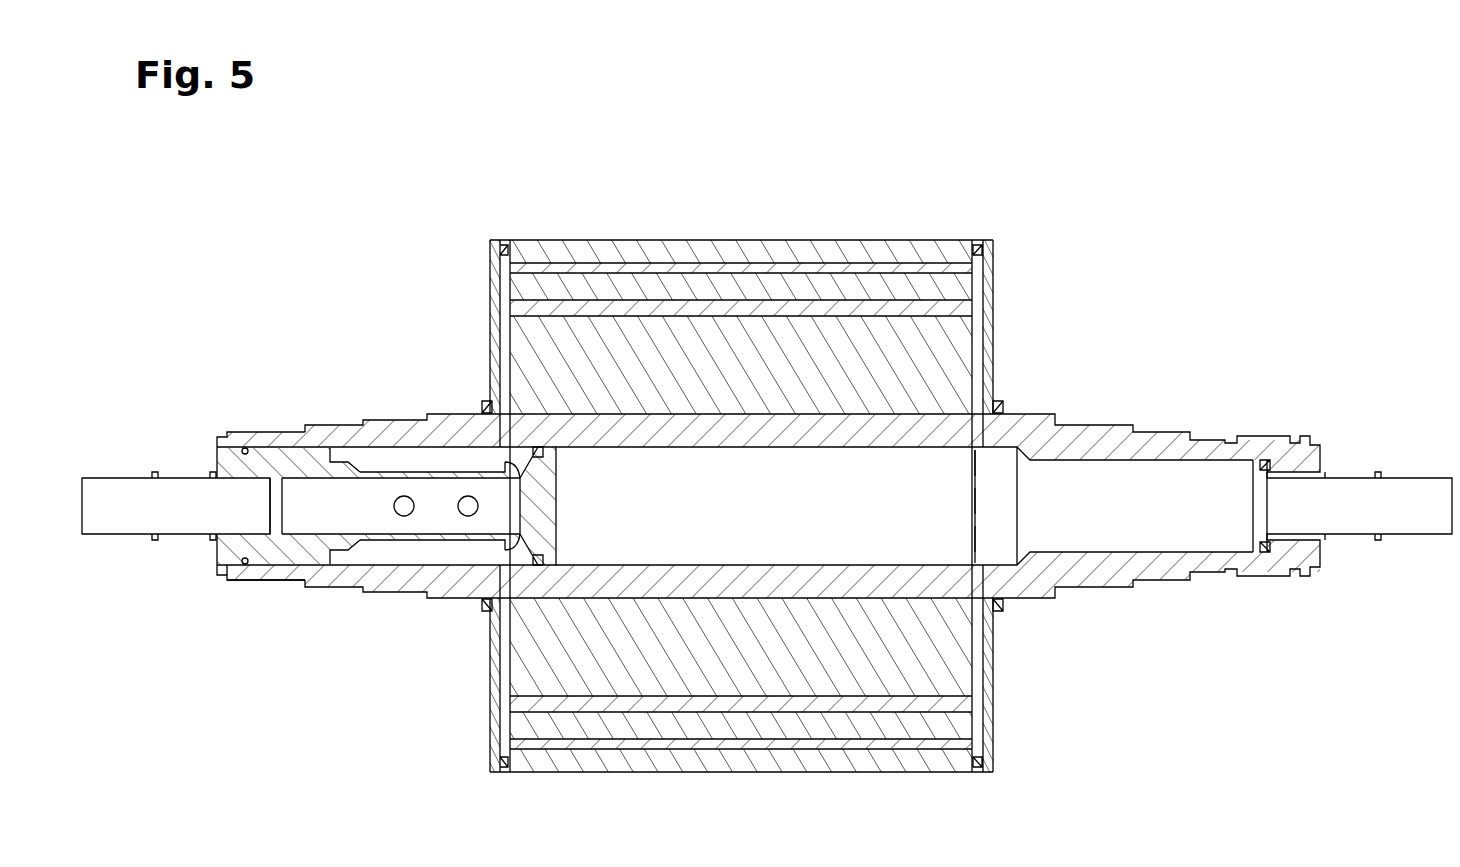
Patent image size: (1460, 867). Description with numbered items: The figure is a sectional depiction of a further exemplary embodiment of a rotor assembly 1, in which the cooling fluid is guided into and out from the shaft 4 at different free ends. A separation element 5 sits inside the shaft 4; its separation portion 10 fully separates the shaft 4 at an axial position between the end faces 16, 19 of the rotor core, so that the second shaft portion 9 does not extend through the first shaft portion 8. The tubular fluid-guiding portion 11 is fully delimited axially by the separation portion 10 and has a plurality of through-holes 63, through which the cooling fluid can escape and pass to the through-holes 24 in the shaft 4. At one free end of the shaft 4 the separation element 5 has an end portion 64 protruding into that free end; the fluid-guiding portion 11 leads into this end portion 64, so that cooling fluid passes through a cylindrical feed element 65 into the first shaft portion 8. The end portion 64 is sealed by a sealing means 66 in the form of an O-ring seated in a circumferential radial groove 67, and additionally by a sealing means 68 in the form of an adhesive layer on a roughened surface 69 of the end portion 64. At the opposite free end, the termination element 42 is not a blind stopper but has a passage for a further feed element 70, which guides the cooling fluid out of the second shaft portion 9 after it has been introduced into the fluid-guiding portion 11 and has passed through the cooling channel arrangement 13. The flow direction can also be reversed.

The rotor assembly 1 is at (1250, 258).
The shaft 4 is at (1090, 440).
The separation element 5 is at (318, 460).
The first shaft portion 8 is at (325, 509).
The second shaft portion 9 is at (1141, 522).
The separation portion 10 is at (497, 552).
The fluid-guiding portion 11 is at (427, 465).
The cooling channel arrangement 13 is at (472, 348).
The end face 16 is at (500, 677).
The end face 19 is at (975, 675).
The through-holes 24 is at (487, 430).
The termination element 42 is at (1305, 445).
The through-holes 63 is at (394, 507).
The end portion 64 is at (238, 561).
The cylindrical feed element 65 is at (108, 528).
The sealing means 66 is at (240, 437).
The radial groove 67 is at (238, 450).
The sealing means 68 is at (285, 580).
The roughened surface 69 is at (290, 440).
The further feed element 70 is at (1415, 495).